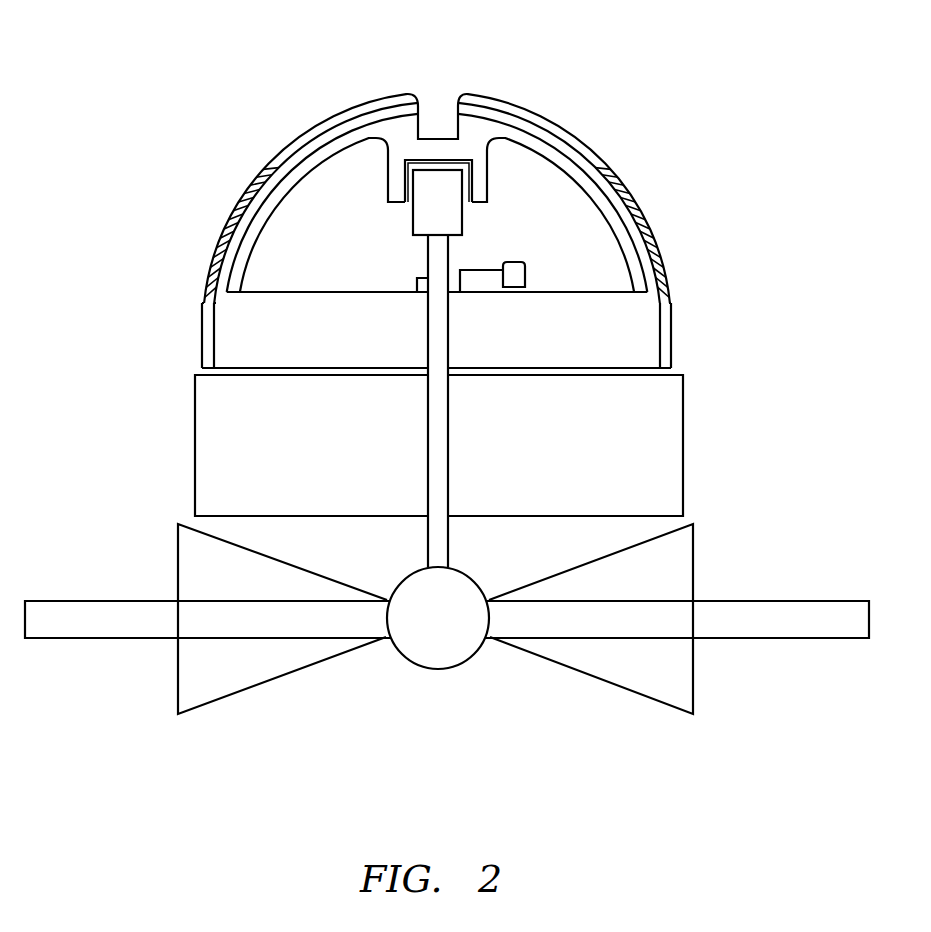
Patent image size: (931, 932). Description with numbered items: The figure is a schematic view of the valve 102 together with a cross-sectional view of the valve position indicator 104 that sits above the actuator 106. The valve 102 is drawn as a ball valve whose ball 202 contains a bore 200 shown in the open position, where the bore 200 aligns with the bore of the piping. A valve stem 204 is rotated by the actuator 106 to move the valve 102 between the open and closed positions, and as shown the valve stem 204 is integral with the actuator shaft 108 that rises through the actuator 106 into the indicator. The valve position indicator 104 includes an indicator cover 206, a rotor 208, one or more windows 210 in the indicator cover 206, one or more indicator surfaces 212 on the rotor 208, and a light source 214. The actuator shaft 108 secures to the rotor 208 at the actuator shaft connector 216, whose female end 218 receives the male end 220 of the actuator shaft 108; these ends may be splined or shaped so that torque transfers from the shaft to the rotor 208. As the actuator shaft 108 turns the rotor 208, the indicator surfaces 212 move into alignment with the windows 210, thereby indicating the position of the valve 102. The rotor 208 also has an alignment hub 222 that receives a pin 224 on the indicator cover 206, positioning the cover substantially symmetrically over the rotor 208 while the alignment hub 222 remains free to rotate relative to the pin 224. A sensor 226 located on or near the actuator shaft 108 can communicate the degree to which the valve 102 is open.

The valve 102 is at (716, 544).
The valve position indicator 104 is at (713, 193).
The actuator 106 is at (706, 424).
The actuator shaft 108 is at (428, 266).
The bore 200 is at (433, 636).
The ball 202 is at (472, 660).
The valve stem 204 is at (428, 534).
The indicator cover 206 is at (288, 148).
The rotor 208 is at (352, 142).
The windows 210 is at (222, 246).
The indicator surfaces 212 is at (262, 184).
The light source 214 is at (527, 272).
The actuator shaft connector 216 is at (494, 182).
The female end 218 is at (470, 206).
The male end 220 is at (413, 210).
The alignment hub 222 is at (459, 100).
The pin 224 is at (417, 96).
The sensor 226 is at (417, 285).